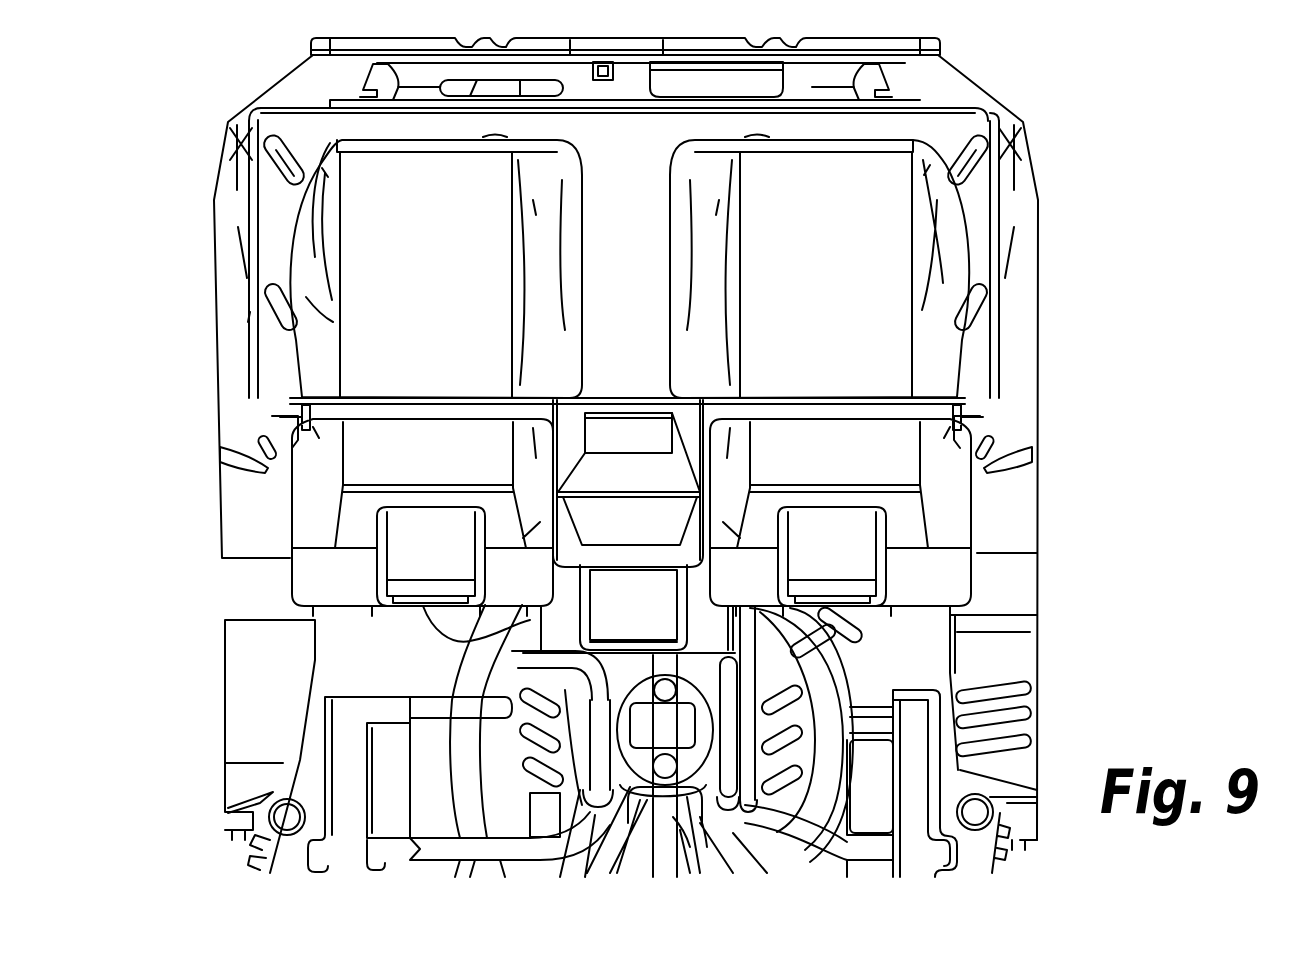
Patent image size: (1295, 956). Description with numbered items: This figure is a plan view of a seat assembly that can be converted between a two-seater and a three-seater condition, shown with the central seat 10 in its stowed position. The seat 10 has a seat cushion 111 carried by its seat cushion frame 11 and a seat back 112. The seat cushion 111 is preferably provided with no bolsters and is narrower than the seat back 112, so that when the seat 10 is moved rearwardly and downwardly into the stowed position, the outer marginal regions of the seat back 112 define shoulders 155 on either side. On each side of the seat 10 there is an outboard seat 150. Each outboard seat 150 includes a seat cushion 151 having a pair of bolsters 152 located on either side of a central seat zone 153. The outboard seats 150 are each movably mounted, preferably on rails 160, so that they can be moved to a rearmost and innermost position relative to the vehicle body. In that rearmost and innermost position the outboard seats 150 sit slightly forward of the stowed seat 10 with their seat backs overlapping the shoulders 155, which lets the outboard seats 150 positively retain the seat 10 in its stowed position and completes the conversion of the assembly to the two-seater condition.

The seat 10 is at (628, 390).
The seat cushion frame 11 is at (640, 450).
The seat cushion 111 is at (648, 537).
The seat back 112 is at (648, 617).
The outboard seat 150 is at (258, 397).
The seat cushion 151 is at (287, 348).
The bolsters 152 is at (314, 300).
The central seat zone 153 is at (447, 306).
The shoulders 155 is at (540, 621).
The rails 160 is at (283, 151).